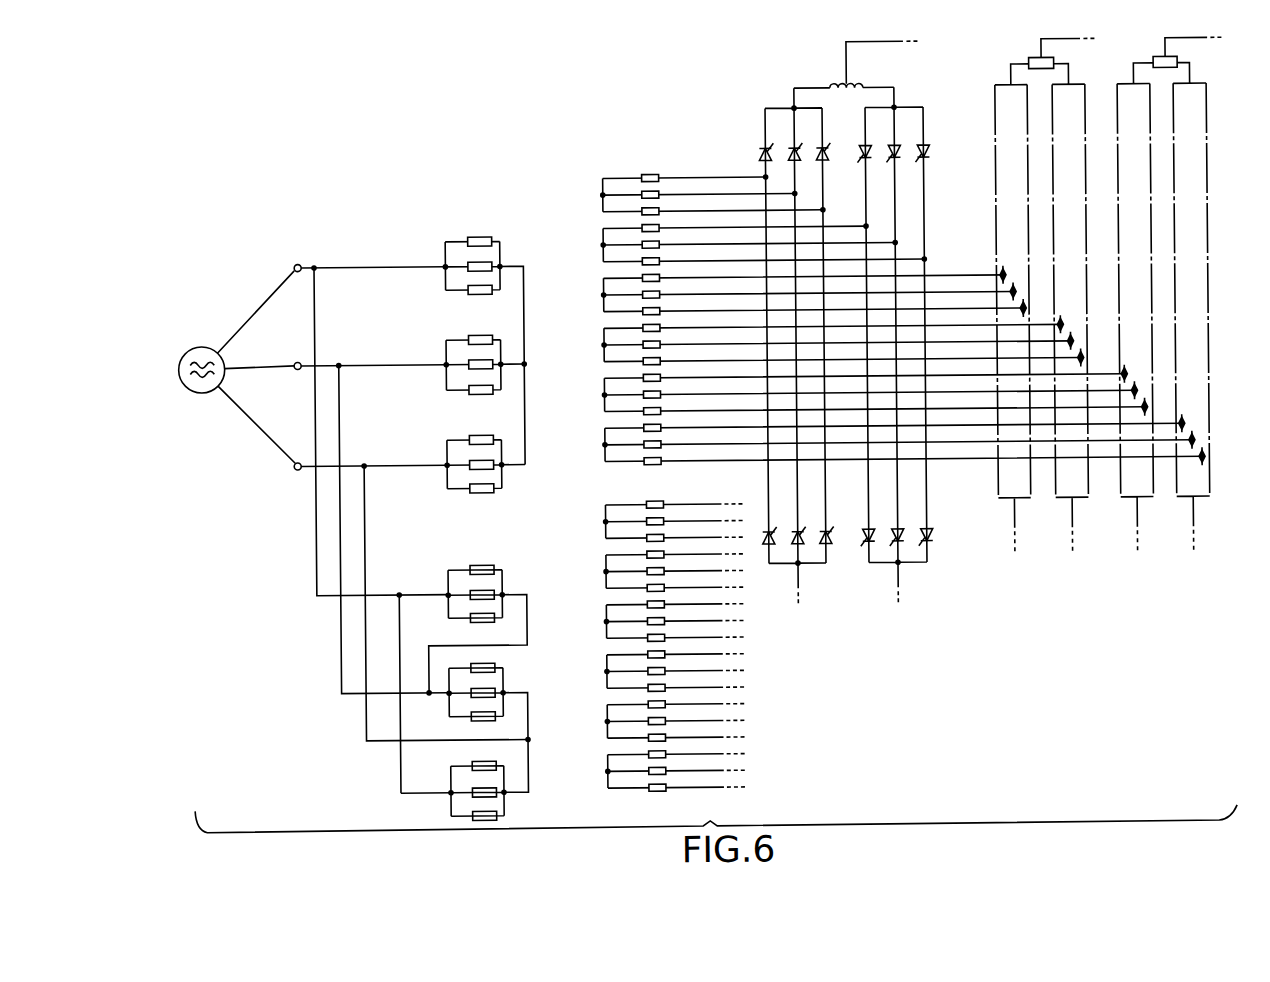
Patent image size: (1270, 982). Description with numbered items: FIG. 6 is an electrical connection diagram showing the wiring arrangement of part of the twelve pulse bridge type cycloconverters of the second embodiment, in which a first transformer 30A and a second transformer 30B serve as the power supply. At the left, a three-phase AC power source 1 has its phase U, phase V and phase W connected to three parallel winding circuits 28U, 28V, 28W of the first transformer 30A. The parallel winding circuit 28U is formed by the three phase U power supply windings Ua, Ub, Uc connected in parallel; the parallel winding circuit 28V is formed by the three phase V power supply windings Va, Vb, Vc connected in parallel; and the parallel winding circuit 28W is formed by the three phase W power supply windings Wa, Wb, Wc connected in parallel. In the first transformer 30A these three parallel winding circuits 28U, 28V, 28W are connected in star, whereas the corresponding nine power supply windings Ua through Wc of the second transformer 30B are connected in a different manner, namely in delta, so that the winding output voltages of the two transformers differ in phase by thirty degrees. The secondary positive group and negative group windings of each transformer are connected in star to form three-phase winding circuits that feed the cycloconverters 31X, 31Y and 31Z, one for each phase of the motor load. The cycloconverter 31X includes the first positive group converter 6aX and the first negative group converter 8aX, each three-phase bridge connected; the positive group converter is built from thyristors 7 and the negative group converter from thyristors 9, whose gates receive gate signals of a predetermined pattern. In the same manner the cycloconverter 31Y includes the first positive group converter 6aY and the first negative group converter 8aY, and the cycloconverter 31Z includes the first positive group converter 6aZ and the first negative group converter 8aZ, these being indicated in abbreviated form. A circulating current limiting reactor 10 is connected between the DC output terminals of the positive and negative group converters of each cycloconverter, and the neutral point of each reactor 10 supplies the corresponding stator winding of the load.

The three-phase AC power source 1 is at (203, 389).
The phase U is at (295, 257).
The phase V is at (296, 353).
The phase W is at (298, 454).
The parallel winding circuit 28U is at (467, 455).
The parallel winding circuit 28V is at (472, 527).
The parallel winding circuit 28W is at (476, 625).
The phase U power supply winding Ua is at (482, 396).
The phase U power supply winding Ub is at (484, 262).
The phase U power supply winding Uc is at (482, 292).
The phase V power supply winding Va is at (482, 494).
The phase V power supply winding Vb is at (495, 358).
The phase V power supply winding Vc is at (483, 390).
The phase W power supply winding Wa is at (487, 593).
The phase W power supply winding Wb is at (492, 454).
The phase W power supply winding Wc is at (483, 488).
The first transformer 30A is at (593, 384).
The second transformer 30B is at (592, 653).
The cycloconverter 31X is at (846, 55).
The cycloconverter 31Y is at (1045, 53).
The cycloconverter 31Z is at (1174, 54).
The first positive group converter 6aX is at (806, 334).
The first negative group converter 8aX is at (905, 335).
The first positive group converter 6aY is at (1012, 146).
The first negative group converter 8aY is at (1072, 110).
The first positive group converter 6aZ is at (1127, 478).
The first negative group converter 8aZ is at (1201, 478).
The thyristor 7 is at (832, 162).
The thyristor 9 is at (928, 163).
The circulating current limiting reactor 10 is at (850, 84).